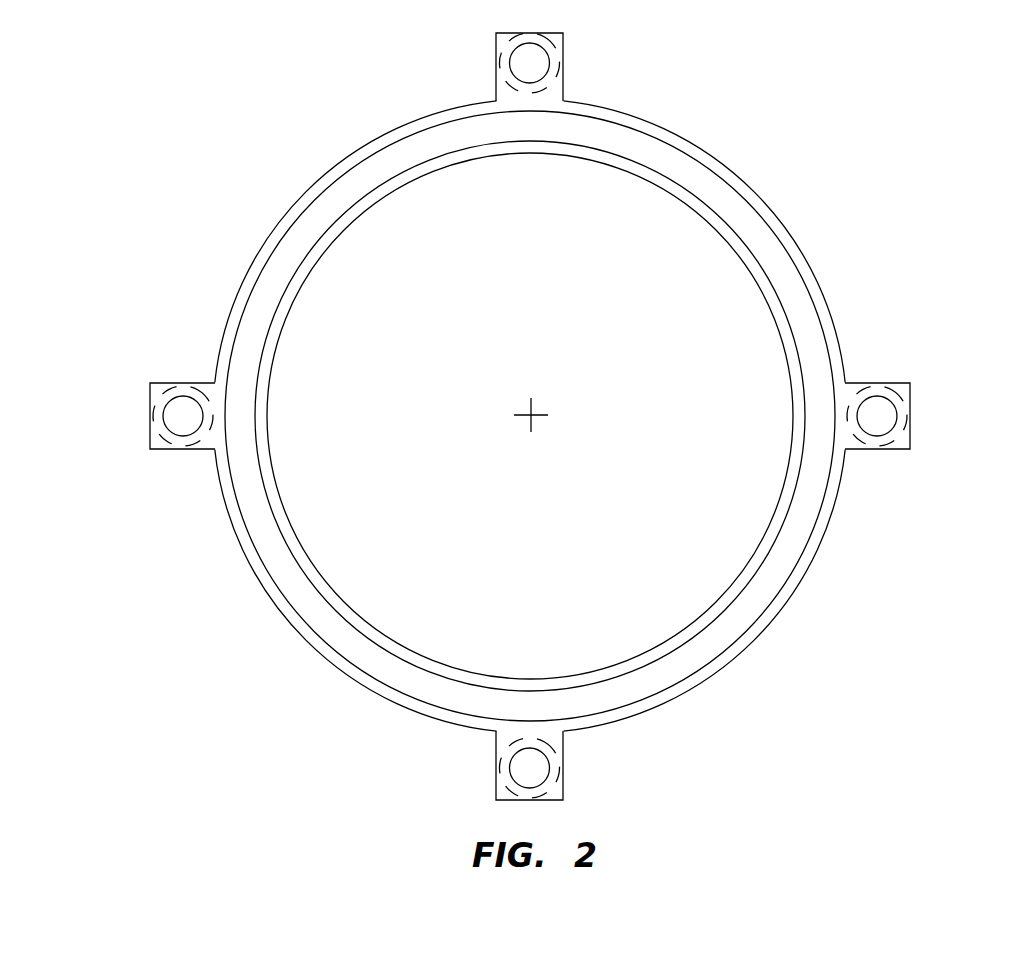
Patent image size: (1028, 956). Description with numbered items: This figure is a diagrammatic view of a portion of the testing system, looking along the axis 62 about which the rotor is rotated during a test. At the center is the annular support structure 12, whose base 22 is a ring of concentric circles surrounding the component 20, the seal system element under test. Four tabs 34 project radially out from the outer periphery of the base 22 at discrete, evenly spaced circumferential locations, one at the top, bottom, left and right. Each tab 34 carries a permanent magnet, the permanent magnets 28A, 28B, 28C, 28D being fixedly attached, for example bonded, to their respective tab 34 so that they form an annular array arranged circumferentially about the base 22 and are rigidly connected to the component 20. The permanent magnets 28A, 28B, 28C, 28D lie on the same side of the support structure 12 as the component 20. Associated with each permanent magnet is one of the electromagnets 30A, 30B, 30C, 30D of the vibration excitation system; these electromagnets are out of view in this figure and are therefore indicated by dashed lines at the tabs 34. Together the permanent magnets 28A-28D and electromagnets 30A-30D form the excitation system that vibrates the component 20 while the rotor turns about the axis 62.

The support structure 12 is at (266, 592).
The component 20 is at (282, 522).
The base 22 is at (330, 592).
The permanent magnet 28A is at (180, 438).
The permanent magnet 28B is at (550, 768).
The permanent magnet 28C is at (897, 418).
The permanent magnet 28D is at (550, 62).
The electromagnet 30A is at (147, 393).
The electromagnet 30B is at (497, 793).
The electromagnet 30C is at (902, 455).
The electromagnet 30D is at (496, 36).
The tab 34 is at (563, 83).
The axis 62 is at (532, 418).